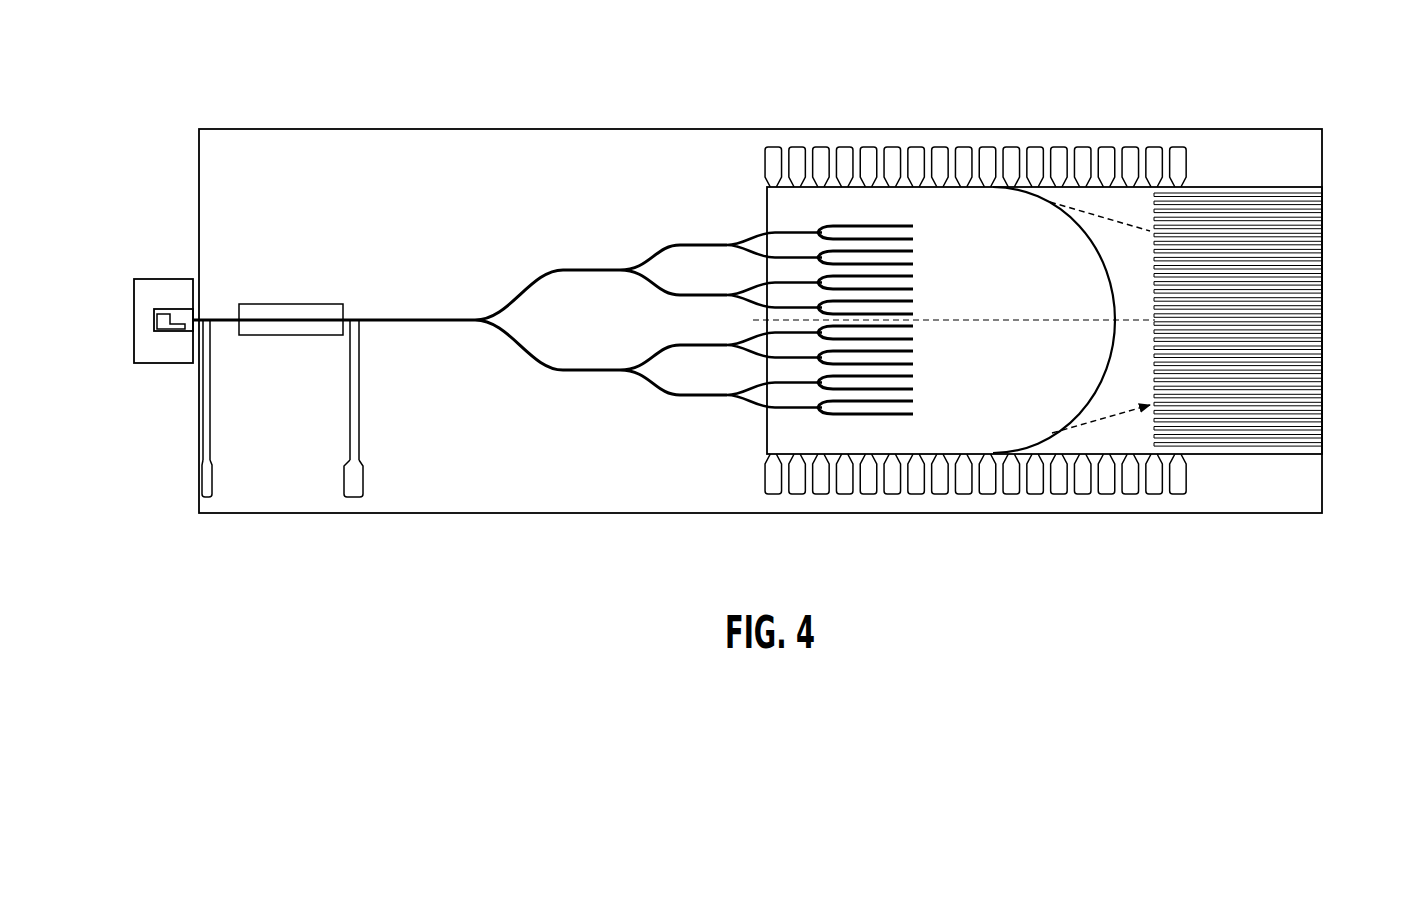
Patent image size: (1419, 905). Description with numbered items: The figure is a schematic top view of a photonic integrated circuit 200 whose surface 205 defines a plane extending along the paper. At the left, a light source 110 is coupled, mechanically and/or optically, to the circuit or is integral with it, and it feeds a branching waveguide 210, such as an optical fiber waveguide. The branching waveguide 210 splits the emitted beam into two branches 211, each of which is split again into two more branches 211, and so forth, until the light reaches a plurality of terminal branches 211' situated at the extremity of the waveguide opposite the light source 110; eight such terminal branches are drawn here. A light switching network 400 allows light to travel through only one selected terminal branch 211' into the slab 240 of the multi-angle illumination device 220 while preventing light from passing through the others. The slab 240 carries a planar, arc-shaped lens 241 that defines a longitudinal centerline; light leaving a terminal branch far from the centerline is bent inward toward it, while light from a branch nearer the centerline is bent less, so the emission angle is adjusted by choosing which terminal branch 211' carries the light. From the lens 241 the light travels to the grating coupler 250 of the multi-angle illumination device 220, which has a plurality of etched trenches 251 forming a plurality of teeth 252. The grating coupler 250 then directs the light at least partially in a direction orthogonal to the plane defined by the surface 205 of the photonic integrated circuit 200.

The photonic integrated circuit 200 is at (760, 305).
The surface 205 is at (465, 475).
The light source 110 is at (177, 365).
The branching waveguide 210 is at (589, 250).
The branches 211 is at (696, 334).
The terminal branches 211' is at (929, 252).
The slab 240 is at (893, 422).
The light switching network 400 is at (842, 160).
The lens 241 is at (1098, 387).
The multi-angle illumination device 220 is at (1283, 334).
The grating coupler 250 is at (1228, 415).
The trenches 251 is at (1323, 355).
The teeth 252 is at (1323, 288).